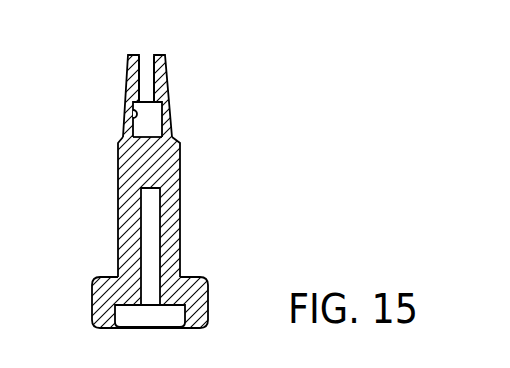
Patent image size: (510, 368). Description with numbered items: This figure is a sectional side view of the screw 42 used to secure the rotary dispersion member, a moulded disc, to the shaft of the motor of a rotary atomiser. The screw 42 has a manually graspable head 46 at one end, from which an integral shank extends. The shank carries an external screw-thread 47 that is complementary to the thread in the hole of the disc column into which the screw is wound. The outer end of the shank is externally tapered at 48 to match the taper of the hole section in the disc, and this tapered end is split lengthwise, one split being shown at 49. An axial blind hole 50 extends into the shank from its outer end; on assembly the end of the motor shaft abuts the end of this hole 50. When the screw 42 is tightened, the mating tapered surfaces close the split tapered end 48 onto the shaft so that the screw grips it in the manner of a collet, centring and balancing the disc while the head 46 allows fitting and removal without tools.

The screw 42 is at (255, 184).
The manually graspable head 46 is at (213, 288).
The external screw-thread 47 is at (181, 192).
The externally tapered outer end 48 is at (170, 87).
The split 49 is at (147, 55).
The axial blind hole 50 is at (134, 121).